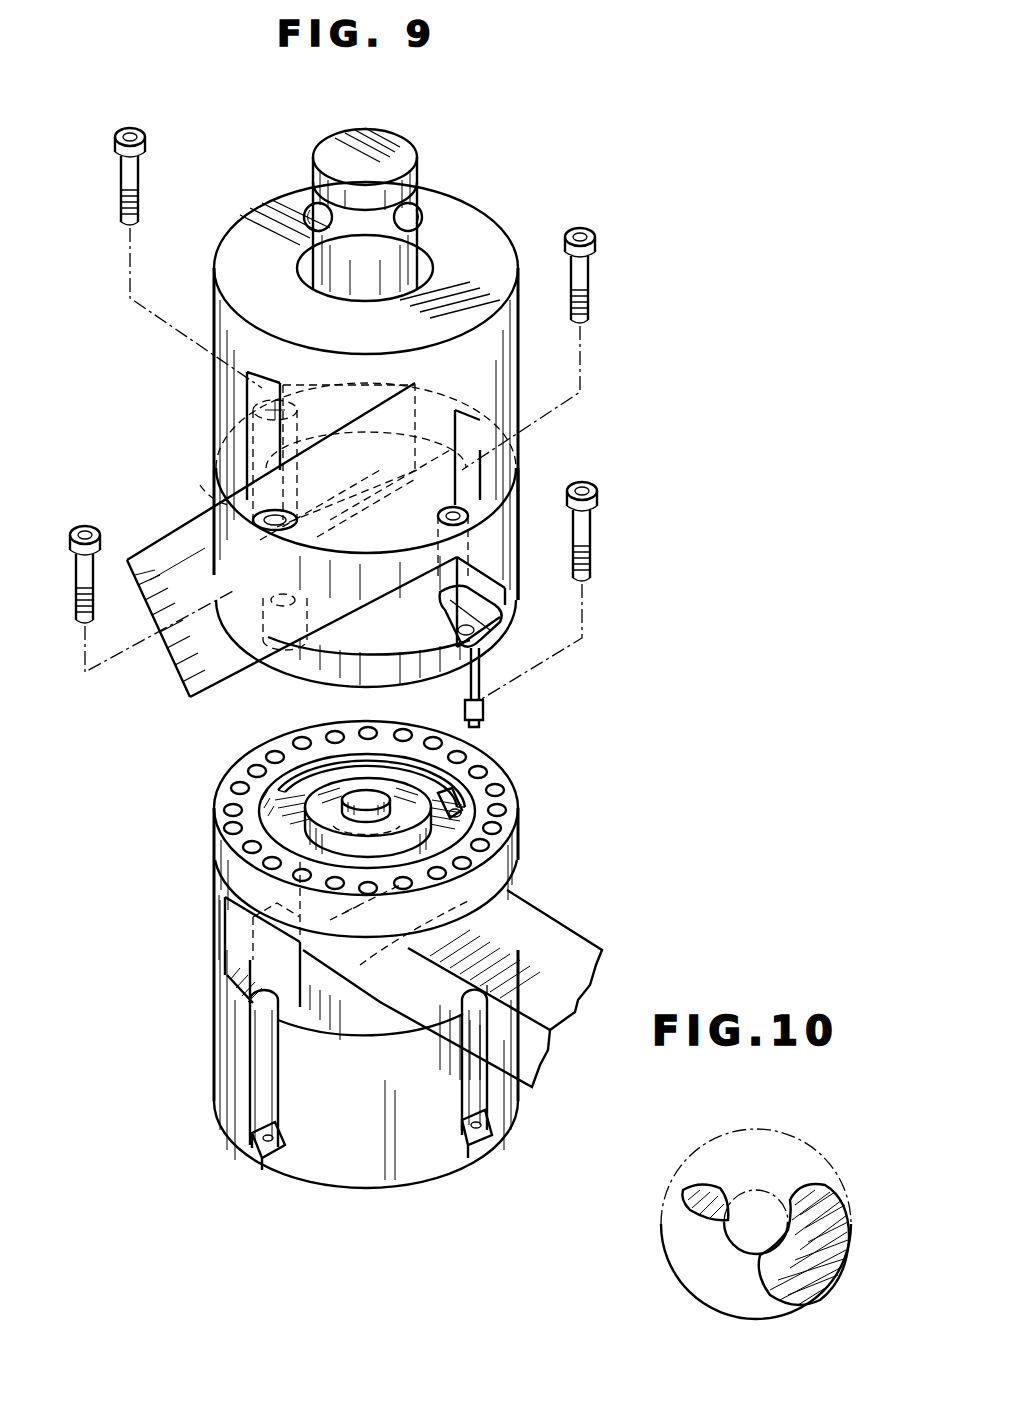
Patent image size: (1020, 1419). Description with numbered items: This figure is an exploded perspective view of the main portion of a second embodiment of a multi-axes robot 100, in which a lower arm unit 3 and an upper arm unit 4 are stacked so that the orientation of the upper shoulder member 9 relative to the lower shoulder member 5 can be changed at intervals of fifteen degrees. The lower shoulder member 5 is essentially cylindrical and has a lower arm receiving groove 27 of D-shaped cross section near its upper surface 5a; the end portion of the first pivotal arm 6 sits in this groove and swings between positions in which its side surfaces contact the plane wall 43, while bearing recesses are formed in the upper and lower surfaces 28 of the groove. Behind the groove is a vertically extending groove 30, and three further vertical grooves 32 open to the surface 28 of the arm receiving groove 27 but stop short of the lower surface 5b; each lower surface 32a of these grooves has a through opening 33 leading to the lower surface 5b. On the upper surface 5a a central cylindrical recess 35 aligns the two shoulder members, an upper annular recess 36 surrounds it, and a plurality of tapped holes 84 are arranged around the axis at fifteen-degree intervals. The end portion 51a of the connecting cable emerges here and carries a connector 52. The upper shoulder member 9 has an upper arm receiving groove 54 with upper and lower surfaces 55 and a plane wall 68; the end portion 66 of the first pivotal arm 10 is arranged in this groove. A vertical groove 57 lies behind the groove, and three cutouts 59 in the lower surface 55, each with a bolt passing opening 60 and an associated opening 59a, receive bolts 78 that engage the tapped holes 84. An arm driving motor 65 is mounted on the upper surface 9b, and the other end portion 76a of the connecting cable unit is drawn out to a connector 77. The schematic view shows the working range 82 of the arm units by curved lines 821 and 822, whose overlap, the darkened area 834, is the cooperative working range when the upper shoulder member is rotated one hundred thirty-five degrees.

In FIG. 9, the connector assembly 100 is at (688, 106).
In FIG. 9, the bolts 78 is at (146, 142).
In FIG. 9, the arm driving motor 65 is at (400, 143).
In FIG. 9, the upper surface of the upper shoulder member 9b is at (495, 230).
In FIG. 9, the upper shoulder member 9 is at (382, 389).
In FIG. 9, the vertically extending groove 57 is at (290, 418).
In FIG. 9, the plane wall 68 is at (200, 495).
In FIG. 9, the first pivotal arm 10 is at (175, 540).
In FIG. 9, the upper and lower surfaces of the upper arm receiving groove 55 is at (490, 498).
In FIG. 9, the cutouts 59 is at (492, 520).
In FIG. 9, the upper arm receiving groove 54 is at (400, 624).
In FIG. 9, the end portion of the first arm 66 is at (416, 617).
In FIG. 9, the bolt passing opening 60 is at (482, 648).
In FIG. 9, the hole 59a is at (480, 636).
In FIG. 9, the connector 77 is at (485, 706).
In FIG. 9, the other end portion of the connecting cable unit 76a is at (466, 699).
In FIG. 9, the upper arm unit 4 is at (142, 412).
In FIG. 9, the lower arm unit 3 is at (132, 933).
In FIG. 9, the upper surface of the lower shoulder member 5a is at (510, 780).
In FIG. 9, the end portion of the connecting cable 51a is at (462, 752).
In FIG. 9, the cylindrical recess 35 is at (368, 803).
In FIG. 9, the connector 52 is at (500, 797).
In FIG. 9, the tapped holes 84 is at (330, 739).
In FIG. 9, the upper annular recess 36 is at (225, 899).
In FIG. 9, the plane wall 43 is at (225, 959).
In FIG. 9, the lower shoulder member 5 is at (367, 1040).
In FIG. 9, the vertically extending grooves 32 is at (262, 1044).
In FIG. 9, the lower surfaces of the grooves 32a is at (252, 1159).
In FIG. 9, the through opening 33 is at (268, 1164).
In FIG. 9, the lower surface of the lower shoulder member 5b is at (358, 1189).
In FIG. 9, the lower arm receiving groove 27 is at (350, 1016).
In FIG. 9, the upper and lower surfaces of the lower arm receiving groove 28 is at (372, 1029).
In FIG. 9, the vertically extending groove 30 is at (262, 934).
In FIG. 9, the first pivotal arm 6 is at (565, 950).
In FIG. 10, the curved line 82 is at (768, 1228).
In FIG. 10, the broken curved line 821 is at (805, 1151).
In FIG. 10, the solid curved line 822 is at (733, 1304).
In FIG. 10, the darkened area 834 is at (685, 1187).